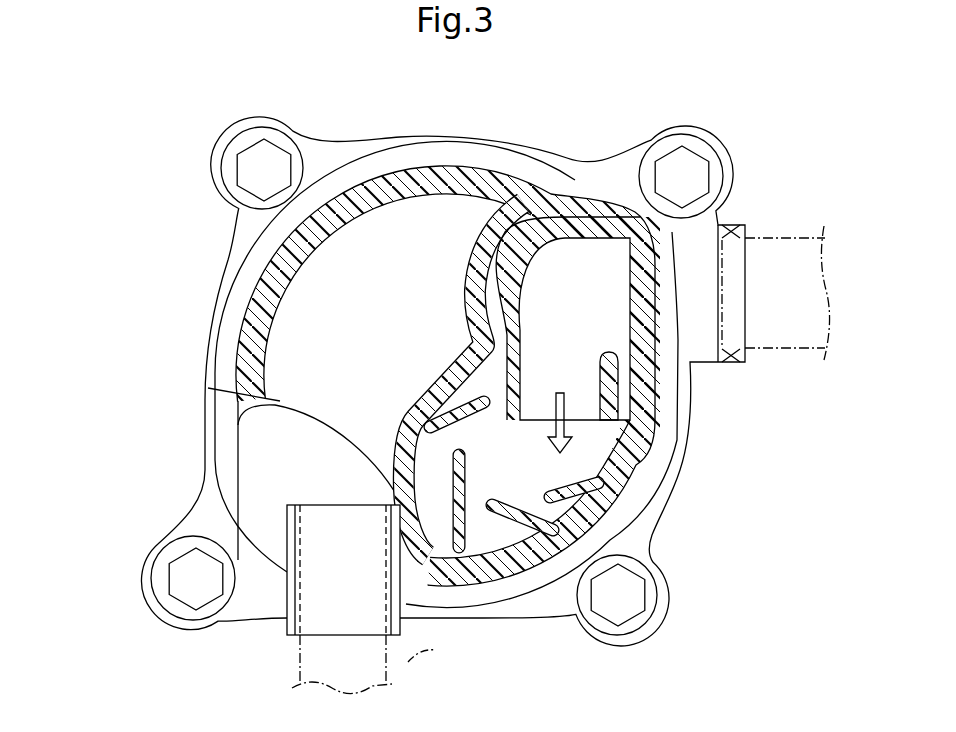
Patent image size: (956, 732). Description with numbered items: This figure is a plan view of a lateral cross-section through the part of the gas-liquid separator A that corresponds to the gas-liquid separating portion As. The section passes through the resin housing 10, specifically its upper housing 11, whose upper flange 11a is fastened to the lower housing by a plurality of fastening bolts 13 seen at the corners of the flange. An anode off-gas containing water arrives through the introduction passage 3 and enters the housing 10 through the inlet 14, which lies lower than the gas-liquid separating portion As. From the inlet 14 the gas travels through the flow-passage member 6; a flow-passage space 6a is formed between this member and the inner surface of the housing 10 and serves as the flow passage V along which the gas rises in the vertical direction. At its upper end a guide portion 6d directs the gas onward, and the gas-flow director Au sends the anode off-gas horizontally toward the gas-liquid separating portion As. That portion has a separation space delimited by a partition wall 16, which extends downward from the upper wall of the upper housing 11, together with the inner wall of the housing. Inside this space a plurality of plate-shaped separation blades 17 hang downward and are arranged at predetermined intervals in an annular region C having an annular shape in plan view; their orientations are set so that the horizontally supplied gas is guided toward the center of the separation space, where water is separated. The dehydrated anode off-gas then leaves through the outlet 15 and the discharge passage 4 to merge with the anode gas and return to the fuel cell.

The housing 10 is at (443, 361).
The upper housing 11 is at (420, 175).
The upper flange 11a is at (332, 150).
The fastening bolts 13 is at (257, 158).
The flow-passage member 6 is at (560, 232).
The flow-passage space 6a is at (602, 302).
The guide portion 6d is at (607, 400).
The partition wall 16 is at (413, 403).
The separation blades 17 is at (463, 467).
The inlet 14 is at (747, 322).
The introduction passage 3 is at (797, 237).
The outlet 15 is at (300, 603).
The discharge passage 4 is at (390, 487).
The gas-liquid separator A is at (163, 247).
The gas-flow director Au is at (537, 337).
The gas-liquid separating portion As is at (495, 388).
The annular region C is at (540, 468).